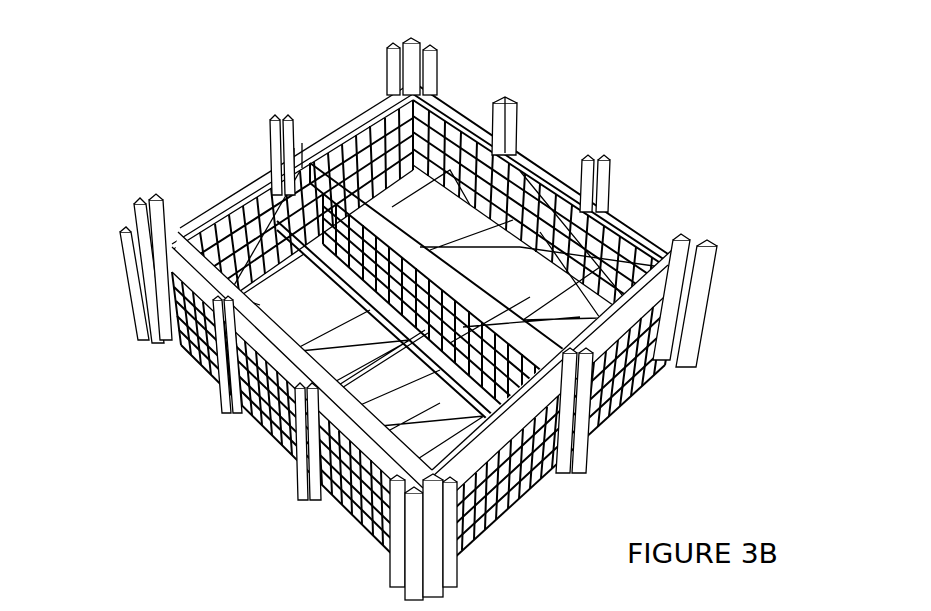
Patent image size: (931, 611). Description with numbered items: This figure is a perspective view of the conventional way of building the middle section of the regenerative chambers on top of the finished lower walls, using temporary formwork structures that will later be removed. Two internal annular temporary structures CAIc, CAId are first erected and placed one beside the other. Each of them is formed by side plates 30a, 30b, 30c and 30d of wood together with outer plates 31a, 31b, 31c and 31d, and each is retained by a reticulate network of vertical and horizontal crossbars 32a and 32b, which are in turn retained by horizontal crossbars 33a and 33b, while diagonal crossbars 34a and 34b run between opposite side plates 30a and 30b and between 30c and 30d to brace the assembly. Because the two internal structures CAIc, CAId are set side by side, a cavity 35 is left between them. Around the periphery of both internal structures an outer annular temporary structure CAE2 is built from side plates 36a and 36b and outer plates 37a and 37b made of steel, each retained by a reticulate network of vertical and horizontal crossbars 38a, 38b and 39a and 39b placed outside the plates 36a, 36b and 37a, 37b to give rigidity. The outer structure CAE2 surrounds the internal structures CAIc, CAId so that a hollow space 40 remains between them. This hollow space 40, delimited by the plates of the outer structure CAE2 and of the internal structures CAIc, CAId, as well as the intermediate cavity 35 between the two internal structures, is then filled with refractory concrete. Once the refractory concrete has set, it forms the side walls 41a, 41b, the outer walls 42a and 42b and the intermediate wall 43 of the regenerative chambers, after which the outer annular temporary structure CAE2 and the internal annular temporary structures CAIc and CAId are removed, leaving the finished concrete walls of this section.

The side plate 30a is at (197, 273).
The side plate 30b is at (296, 165).
The side plate 30c is at (552, 400).
The side plate 30d is at (650, 250).
The outer plate 31a is at (455, 462).
The outer plate 31b is at (200, 222).
The outer plate 31c is at (590, 340).
The outer plate 31d is at (320, 137).
The vertical and horizontal crossbar 32a is at (433, 333).
The vertical and horizontal crossbar 32b is at (540, 232).
The horizontal crossbar 33a is at (260, 305).
The horizontal crossbar 33b is at (393, 212).
The diagonal crossbar 34a is at (230, 218).
The diagonal crossbar 34b is at (618, 273).
The cavity 35 is at (383, 230).
The side plate 36a is at (280, 375).
The side plate 36b is at (525, 150).
The outer plate 37a is at (510, 440).
The outer plate 37b is at (678, 343).
The vertical and horizontal crossbar 38a is at (195, 330).
The vertical and horizontal crossbar 38b is at (608, 200).
The vertical and horizontal crossbar 39a is at (607, 393).
The vertical and horizontal crossbar 39b is at (265, 165).
The hollow space 40 is at (365, 437).
The side wall 41a is at (343, 450).
The side wall 41b is at (553, 178).
The outer wall 42a is at (607, 337).
The outer wall 42b is at (352, 118).
The intermediate wall 43 is at (493, 318).
The internal annular temporary structure CAIc is at (268, 178).
The internal annular temporary structure CAId is at (430, 100).
The outer annular temporary structure CAE2 is at (353, 523).